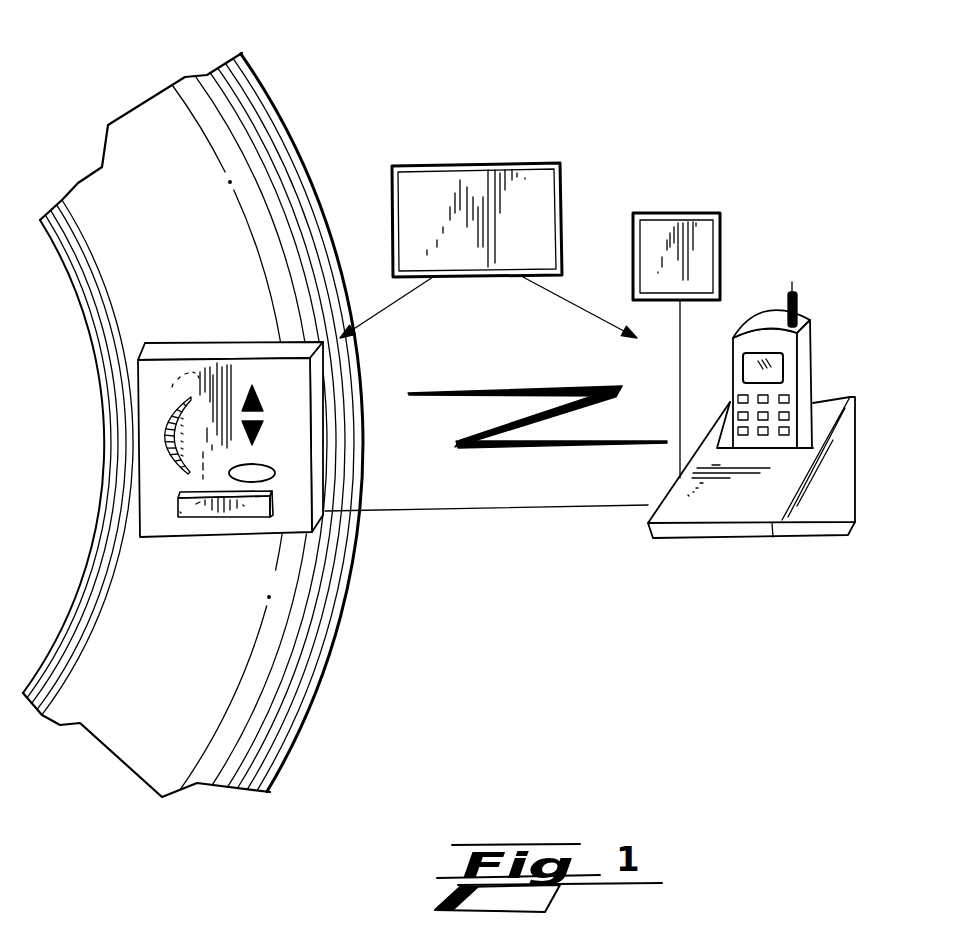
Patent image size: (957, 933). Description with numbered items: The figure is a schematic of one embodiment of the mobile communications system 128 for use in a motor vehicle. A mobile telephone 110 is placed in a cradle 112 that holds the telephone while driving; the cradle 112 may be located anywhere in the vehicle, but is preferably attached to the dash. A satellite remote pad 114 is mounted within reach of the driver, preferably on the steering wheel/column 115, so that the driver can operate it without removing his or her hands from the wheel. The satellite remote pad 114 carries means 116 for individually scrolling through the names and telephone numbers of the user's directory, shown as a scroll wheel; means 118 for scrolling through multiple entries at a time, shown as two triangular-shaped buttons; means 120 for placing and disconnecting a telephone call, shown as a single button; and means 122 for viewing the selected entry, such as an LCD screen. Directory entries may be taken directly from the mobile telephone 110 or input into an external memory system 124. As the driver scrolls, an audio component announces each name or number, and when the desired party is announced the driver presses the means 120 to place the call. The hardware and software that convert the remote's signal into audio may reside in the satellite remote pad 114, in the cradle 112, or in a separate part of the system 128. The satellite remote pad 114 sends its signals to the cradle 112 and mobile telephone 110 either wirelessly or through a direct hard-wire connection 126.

The mobile telephone 110 is at (828, 280).
The cradle 112 is at (738, 536).
The satellite remote pad 114 is at (222, 342).
The steering wheel/column 115 is at (290, 135).
The means for individually scrolling through the entries 116 is at (163, 436).
The means for scrolling through multiple name and/or telephone number entries 118 is at (265, 397).
The means for placing and disconnecting a telephone call 120 is at (274, 477).
The means for viewing the selected name and/or telephone number entry 122 is at (230, 513).
The external memory system 124 is at (680, 212).
The direct hard-wire connection 126 is at (487, 512).
The system 128 is at (490, 163).